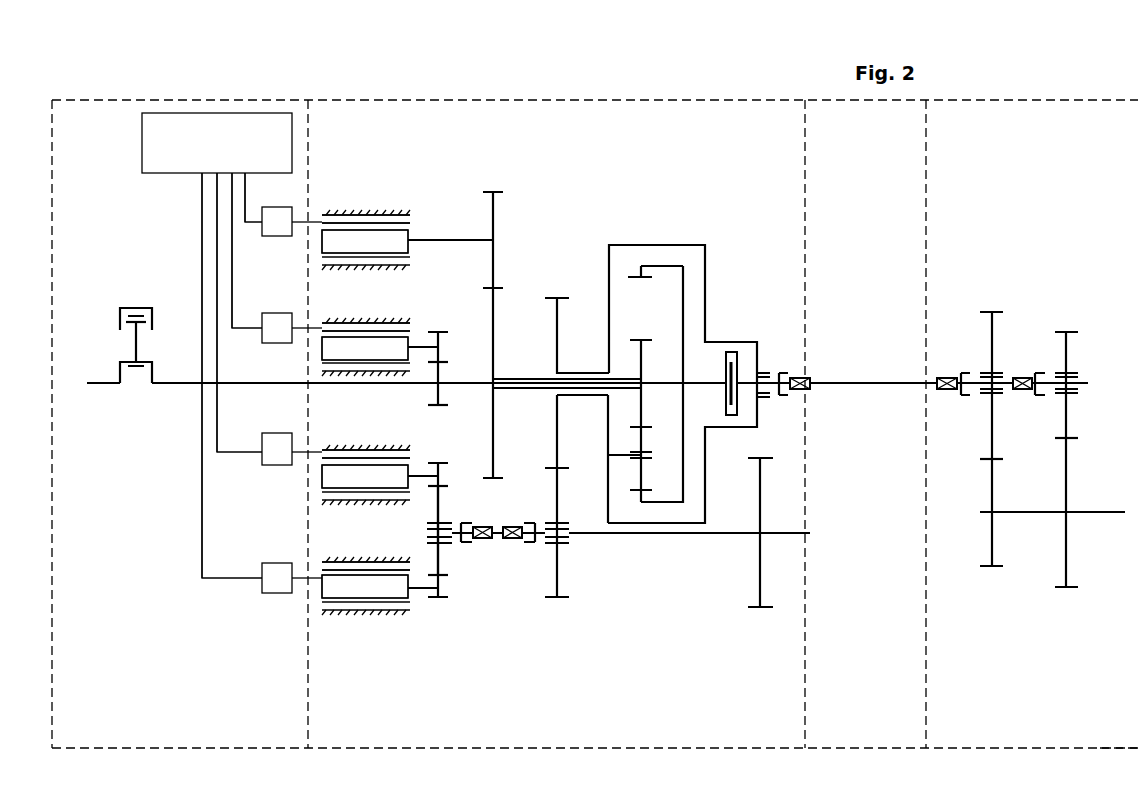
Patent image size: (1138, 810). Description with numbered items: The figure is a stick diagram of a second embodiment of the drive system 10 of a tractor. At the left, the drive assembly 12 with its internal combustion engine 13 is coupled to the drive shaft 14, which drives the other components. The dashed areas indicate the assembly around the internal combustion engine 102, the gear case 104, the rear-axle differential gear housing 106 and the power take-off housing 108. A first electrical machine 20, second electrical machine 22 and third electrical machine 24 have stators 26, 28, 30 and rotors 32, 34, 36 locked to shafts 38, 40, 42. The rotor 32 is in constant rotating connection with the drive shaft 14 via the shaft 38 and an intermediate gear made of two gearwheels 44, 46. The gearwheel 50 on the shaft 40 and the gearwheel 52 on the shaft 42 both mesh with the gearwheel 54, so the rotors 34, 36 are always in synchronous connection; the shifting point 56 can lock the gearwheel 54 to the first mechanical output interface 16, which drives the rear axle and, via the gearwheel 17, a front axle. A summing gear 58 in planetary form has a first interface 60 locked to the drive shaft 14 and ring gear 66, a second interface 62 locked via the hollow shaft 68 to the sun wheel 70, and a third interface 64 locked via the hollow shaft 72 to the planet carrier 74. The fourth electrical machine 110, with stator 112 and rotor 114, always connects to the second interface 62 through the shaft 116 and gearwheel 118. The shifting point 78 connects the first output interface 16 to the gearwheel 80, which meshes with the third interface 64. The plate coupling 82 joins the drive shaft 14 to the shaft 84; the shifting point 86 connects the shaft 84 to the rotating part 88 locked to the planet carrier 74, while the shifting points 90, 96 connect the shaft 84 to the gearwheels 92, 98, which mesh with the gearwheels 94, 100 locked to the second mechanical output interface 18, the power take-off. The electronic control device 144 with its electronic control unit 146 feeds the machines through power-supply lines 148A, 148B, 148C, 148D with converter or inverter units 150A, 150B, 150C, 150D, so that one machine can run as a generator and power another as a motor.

The drive system 10 is at (695, 90).
The drive assembly 12 is at (138, 300).
The internal combustion engine 13 is at (154, 322).
The drive shaft 14 is at (181, 385).
The first mechanical output interface 16 is at (684, 535).
The gearwheel 17 is at (763, 516).
The second mechanical output interface 18 is at (1111, 514).
The first electrical machine 20 is at (306, 357).
The second electrical machine 22 is at (306, 487).
The third electrical machine 24 is at (306, 607).
The stator 26 is at (362, 322).
The stator 28 is at (362, 449).
The stator 30 is at (362, 561).
The rotor 32 is at (366, 350).
The rotor 34 is at (364, 478).
The rotor 36 is at (364, 590).
The shaft 38 is at (437, 334).
The shaft 40 is at (420, 475).
The shaft 42 is at (420, 590).
The gearwheel 44 is at (442, 400).
The gearwheel 46 is at (446, 350).
The gearwheel 50 is at (446, 470).
The gearwheel 52 is at (442, 582).
The gearwheel 54 is at (442, 500).
The shifting point 56 is at (480, 548).
The summing gear 58 is at (659, 237).
The first interface 60 is at (681, 380).
The second interface 62 is at (496, 320).
The third interface 64 is at (559, 420).
The ring gear 66 is at (673, 266).
The hollow shaft 68 is at (541, 378).
The sun wheel 70 is at (640, 356).
The hollow shaft 72 is at (590, 371).
The planet carrier 74 is at (608, 488).
The shifting point 78 is at (514, 548).
The gearwheel 80 is at (559, 564).
The coupling 82 is at (731, 351).
The shaft 84 is at (871, 385).
The shifting point 86 is at (808, 377).
The rotating part 88 is at (757, 428).
The shifting point 90 is at (947, 376).
The gearwheel 92 is at (996, 322).
The gearwheel 94 is at (990, 536).
The shifting point 96 is at (1022, 376).
The gearwheel 98 is at (1069, 350).
The gearwheel 100 is at (1068, 492).
The assembly around the internal combustion engine 102 is at (184, 752).
The gear case 104 is at (570, 752).
The rear-axle differential gear housing 106 is at (866, 752).
The power take-off housing 108 is at (1040, 752).
The fourth electrical machine 110 is at (306, 252).
The stator 112 is at (362, 213).
The rotor 114 is at (364, 240).
The shaft 116 is at (426, 239).
The gearwheel 118 is at (496, 212).
The electronic control device 144 is at (190, 214).
The electronic control unit 146 is at (198, 152).
The power-supply line 148A is at (233, 265).
The power-supply line 148B is at (236, 452).
The power-supply line 148C is at (235, 579).
The power-supply line 148D is at (247, 190).
The converter or inverter unit 150A is at (276, 330).
The converter or inverter unit 150B is at (278, 442).
The converter or inverter unit 150C is at (277, 570).
The converter or inverter unit 150D is at (280, 207).